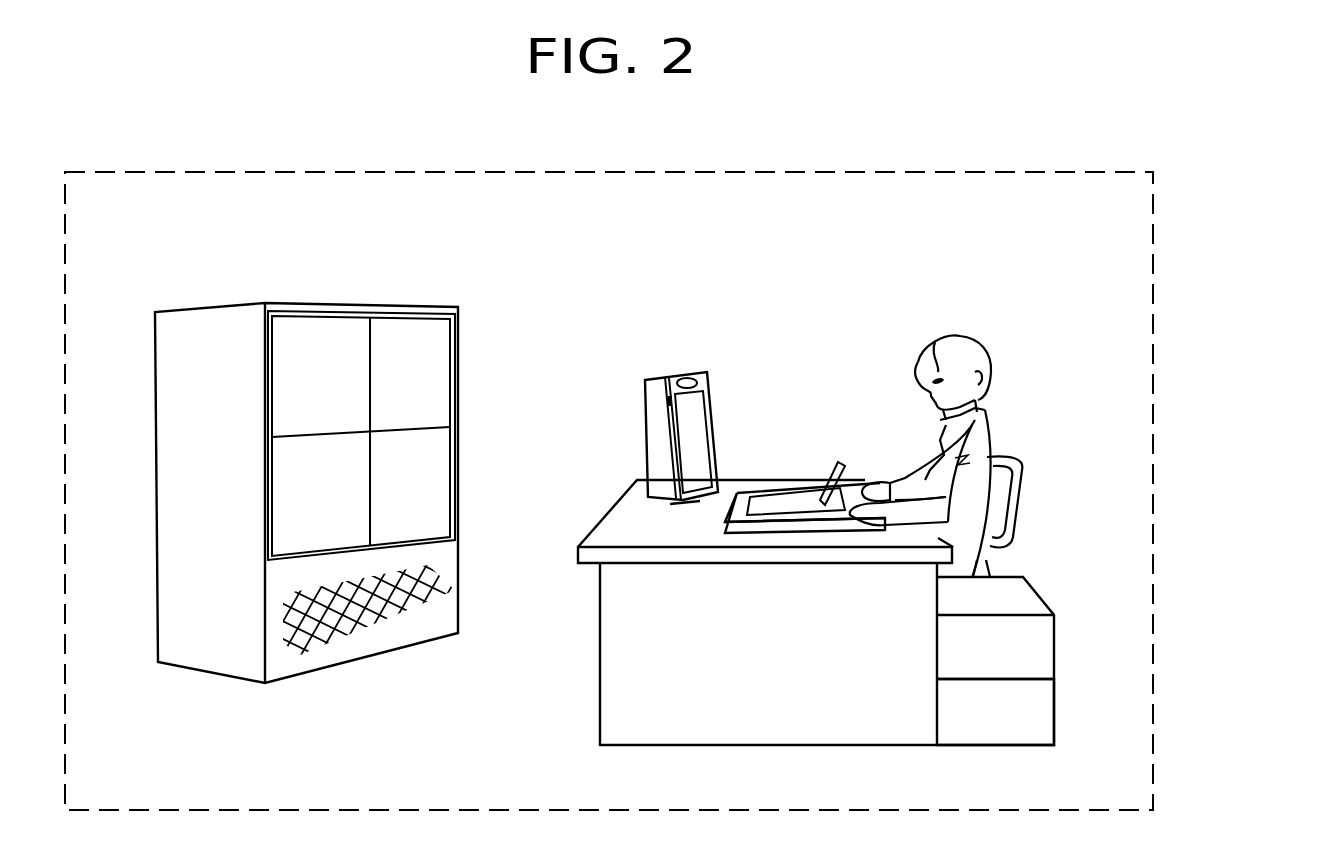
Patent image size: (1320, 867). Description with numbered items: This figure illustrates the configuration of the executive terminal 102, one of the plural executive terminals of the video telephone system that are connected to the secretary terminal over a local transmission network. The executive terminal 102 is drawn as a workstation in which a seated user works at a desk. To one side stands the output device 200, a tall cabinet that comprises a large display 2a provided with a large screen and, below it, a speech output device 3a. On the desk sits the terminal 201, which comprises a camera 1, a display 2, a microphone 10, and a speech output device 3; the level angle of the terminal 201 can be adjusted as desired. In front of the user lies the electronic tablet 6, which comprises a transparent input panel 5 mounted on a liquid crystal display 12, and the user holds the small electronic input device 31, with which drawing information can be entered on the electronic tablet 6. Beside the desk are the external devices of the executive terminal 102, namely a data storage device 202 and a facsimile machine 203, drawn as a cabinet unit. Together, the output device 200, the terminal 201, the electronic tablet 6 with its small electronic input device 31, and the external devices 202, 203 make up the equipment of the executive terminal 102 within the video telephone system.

The executive terminal 102 is at (1012, 172).
The output device 200 is at (155, 394).
The large display 2a is at (285, 503).
The speech output device 3a is at (338, 633).
The terminal 201 is at (639, 419).
The microphone 10 is at (647, 402).
The display 2 is at (678, 428).
The camera 1 is at (689, 372).
The speech output device 3 is at (678, 502).
The electronic tablet 6 is at (784, 508).
The transparent input panel 5 is at (790, 500).
The liquid crystal display 12 is at (788, 525).
The small electronic input device 31 is at (838, 466).
The data storage device 202 is at (987, 632).
The facsimile machine 203 is at (1040, 717).